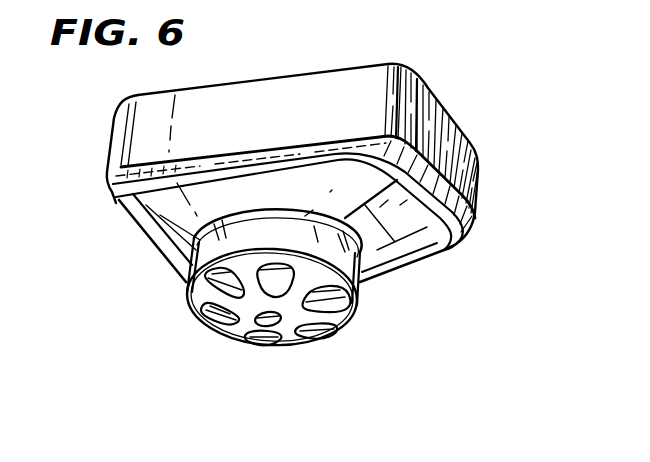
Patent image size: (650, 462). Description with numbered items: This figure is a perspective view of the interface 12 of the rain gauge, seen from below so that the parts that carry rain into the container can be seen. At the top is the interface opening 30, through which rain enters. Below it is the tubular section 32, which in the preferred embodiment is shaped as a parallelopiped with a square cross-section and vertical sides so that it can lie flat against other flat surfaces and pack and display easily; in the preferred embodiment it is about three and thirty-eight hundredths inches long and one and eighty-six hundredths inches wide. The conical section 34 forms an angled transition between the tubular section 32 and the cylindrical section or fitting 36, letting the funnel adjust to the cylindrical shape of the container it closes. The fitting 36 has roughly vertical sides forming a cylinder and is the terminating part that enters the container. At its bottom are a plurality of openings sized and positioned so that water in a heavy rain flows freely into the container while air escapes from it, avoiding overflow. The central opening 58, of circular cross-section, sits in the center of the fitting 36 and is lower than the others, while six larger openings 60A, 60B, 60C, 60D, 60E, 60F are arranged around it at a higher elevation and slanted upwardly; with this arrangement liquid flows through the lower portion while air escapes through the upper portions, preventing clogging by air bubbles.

The interface 12 is at (332, 26).
The interface opening 30 is at (407, 66).
The tubular section 32 is at (455, 147).
The conical section 34 is at (422, 237).
The cylindrical section or fitting 36 is at (365, 299).
The central opening 58 is at (268, 322).
The opening 60A is at (340, 340).
The opening 60B is at (360, 313).
The opening 60C is at (280, 270).
The opening 60D is at (200, 284).
The opening 60E is at (202, 322).
The opening 60F is at (250, 345).